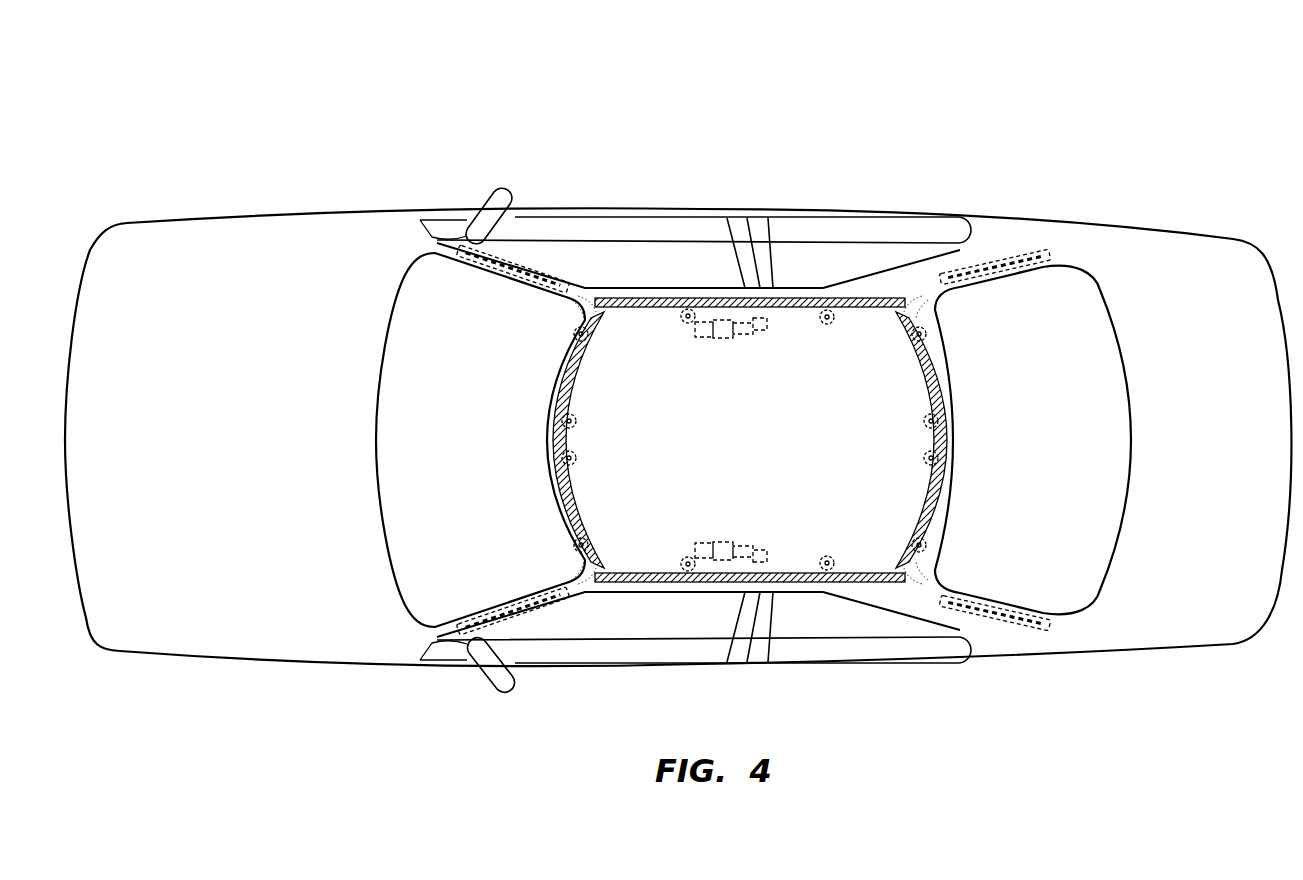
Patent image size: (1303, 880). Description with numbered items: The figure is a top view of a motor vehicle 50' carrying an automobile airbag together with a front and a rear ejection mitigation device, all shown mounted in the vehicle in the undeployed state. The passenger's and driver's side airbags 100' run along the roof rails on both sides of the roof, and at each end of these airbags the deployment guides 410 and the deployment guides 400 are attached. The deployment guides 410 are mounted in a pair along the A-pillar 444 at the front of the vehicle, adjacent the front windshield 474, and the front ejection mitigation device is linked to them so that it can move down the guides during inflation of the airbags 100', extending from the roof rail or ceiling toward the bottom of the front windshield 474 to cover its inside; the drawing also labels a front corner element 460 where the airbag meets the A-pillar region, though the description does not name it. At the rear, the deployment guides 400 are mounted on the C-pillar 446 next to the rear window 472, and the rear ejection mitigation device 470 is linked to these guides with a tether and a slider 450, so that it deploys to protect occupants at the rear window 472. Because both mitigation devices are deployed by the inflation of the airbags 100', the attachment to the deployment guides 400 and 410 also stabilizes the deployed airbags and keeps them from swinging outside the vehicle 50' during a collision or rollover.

The vehicle 50' is at (678, 489).
The front windshield 474 is at (428, 530).
The rear window 472 is at (1079, 390).
The A-pillar 444 is at (437, 238).
The deployment guides 410 is at (523, 268).
The front roof rail corner 460 is at (568, 285).
The passenger's and driver's side airbags 100' is at (755, 419).
The rear ejection mitigation device 470 is at (950, 445).
The slider 450 is at (941, 280).
The C-pillar 446 is at (963, 257).
The deployment guides 400 is at (1027, 253).